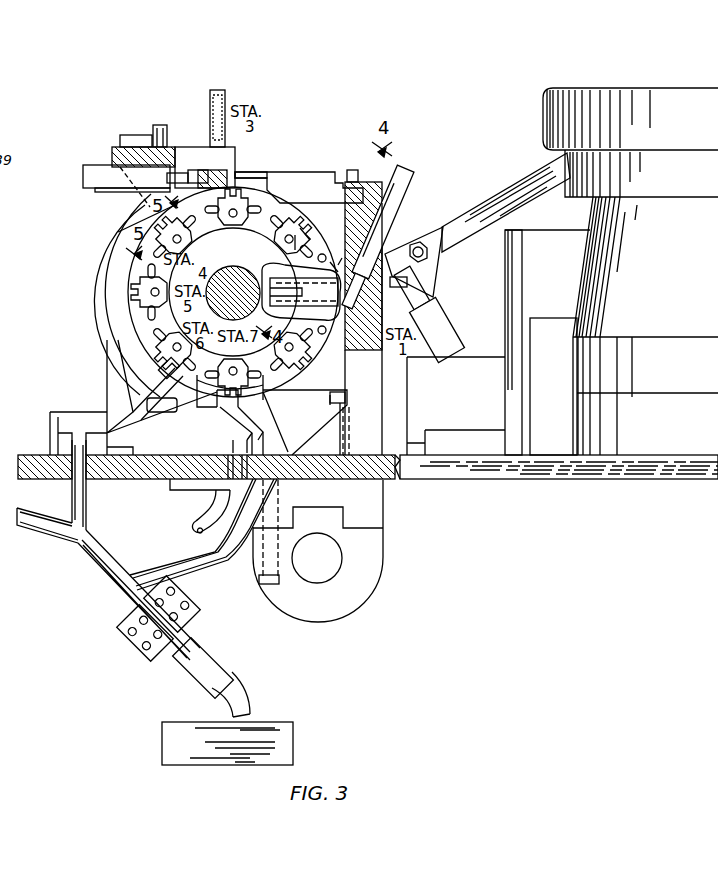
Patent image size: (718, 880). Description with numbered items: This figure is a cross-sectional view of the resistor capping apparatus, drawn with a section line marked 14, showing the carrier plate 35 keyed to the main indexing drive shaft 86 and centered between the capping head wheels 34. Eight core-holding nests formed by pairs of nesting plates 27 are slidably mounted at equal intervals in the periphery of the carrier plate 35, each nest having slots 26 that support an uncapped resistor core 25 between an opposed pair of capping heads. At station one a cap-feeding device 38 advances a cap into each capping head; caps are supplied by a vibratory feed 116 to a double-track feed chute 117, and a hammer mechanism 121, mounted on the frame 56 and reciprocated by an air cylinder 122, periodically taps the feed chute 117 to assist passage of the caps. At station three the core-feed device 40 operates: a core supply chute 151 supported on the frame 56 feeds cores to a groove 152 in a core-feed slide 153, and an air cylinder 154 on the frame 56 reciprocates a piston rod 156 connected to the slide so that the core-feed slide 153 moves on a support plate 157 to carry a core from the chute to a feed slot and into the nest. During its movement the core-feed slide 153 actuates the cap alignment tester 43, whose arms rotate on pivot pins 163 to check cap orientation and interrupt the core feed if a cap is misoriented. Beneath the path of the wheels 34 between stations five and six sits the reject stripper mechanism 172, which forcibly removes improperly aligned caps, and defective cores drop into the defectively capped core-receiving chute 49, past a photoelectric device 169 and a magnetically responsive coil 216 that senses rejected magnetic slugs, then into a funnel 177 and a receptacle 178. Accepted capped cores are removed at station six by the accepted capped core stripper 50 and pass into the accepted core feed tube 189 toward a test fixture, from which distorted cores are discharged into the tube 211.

The tube 14 is at (246, 435).
The resistor core 25 is at (148, 214).
The slots 26 is at (147, 247).
The nesting plates 27 is at (160, 262).
The wheels 34 is at (116, 243).
The carrier plate 35 is at (128, 322).
The cap-feeding device 38 is at (484, 202).
The core-feed device 40 is at (240, 165).
The cap alignment tester 43 is at (310, 172).
The defectively capped core-receiving chute 49 is at (64, 412).
The accepted capped core stripper 50 is at (218, 408).
The frame 56 is at (118, 147).
The main indexing drive shaft 86 is at (250, 268).
The vibratory feed 116 is at (570, 88).
The feed chute 117 is at (543, 168).
The hammer mechanism 121 is at (448, 340).
The air cylinder 122 is at (432, 324).
The core supply chute 151 is at (222, 96).
The groove 152 is at (213, 186).
The core-feed slide 153 is at (205, 178).
The air cylinder 154 is at (96, 165).
The piston rod 156 is at (196, 176).
The support plate 157 is at (113, 191).
The pivot pin 163 is at (356, 170).
The photoelectric device 169 is at (230, 650).
The reject stripper mechanism 172 is at (134, 373).
The funnel 177 is at (68, 445).
The receptacle 178 is at (162, 742).
The accepted core feed tube 189 is at (212, 502).
The tube 211 is at (47, 538).
The magnetically responsive coil 216 is at (124, 620).